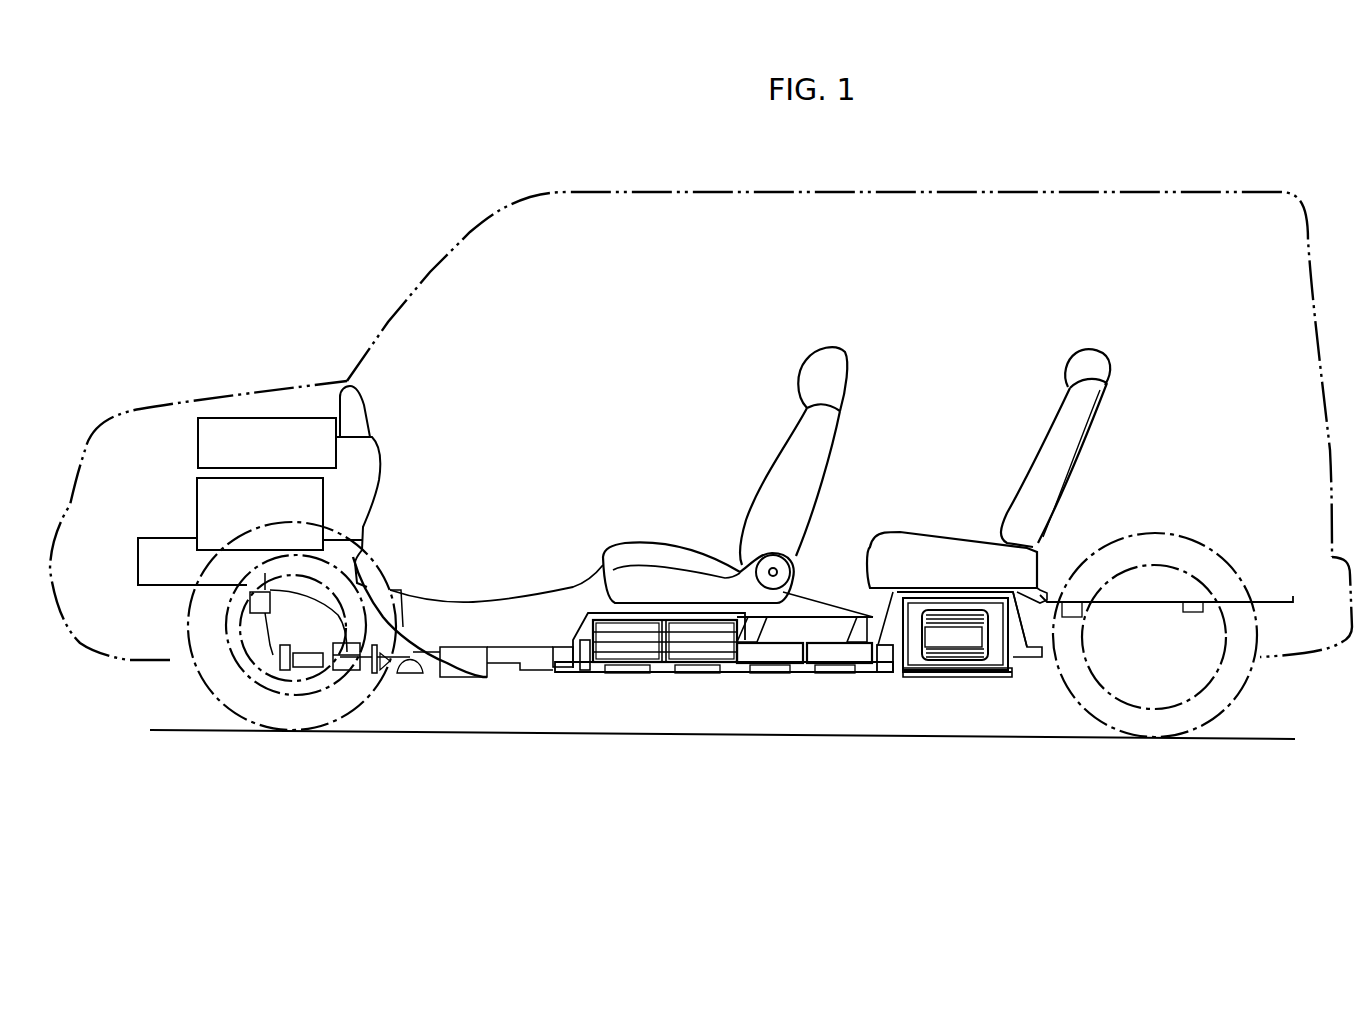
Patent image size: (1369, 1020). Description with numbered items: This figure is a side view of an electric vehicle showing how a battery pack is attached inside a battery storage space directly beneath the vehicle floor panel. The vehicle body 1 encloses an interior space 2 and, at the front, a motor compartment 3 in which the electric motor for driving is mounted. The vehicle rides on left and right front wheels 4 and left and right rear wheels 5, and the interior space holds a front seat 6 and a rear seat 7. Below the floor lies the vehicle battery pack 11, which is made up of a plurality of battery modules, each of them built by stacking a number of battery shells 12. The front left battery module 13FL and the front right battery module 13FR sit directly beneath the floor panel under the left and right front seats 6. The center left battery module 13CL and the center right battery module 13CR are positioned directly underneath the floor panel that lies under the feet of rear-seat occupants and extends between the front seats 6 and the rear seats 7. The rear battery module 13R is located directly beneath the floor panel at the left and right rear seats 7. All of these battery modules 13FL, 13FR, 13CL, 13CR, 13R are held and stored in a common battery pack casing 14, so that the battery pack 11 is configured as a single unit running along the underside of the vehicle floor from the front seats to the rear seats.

The vehicle body 1 is at (1166, 194).
The interior space 2 is at (605, 321).
The motor compartment 3 is at (129, 491).
The front wheels 4 is at (246, 723).
The rear wheels 5 is at (1220, 722).
The front seat 6 is at (765, 462).
The rear seat 7 is at (1045, 436).
The vehicle battery pack 11 is at (588, 672).
The battery shell 12 is at (688, 628).
The front left battery module 13FL is at (659, 672).
The front right battery module 13FR is at (737, 676).
The center left battery module 13CL is at (815, 674).
The center right battery module 13CR is at (873, 676).
The rear battery module 13R is at (1005, 683).
The battery pack casing 14 is at (890, 610).